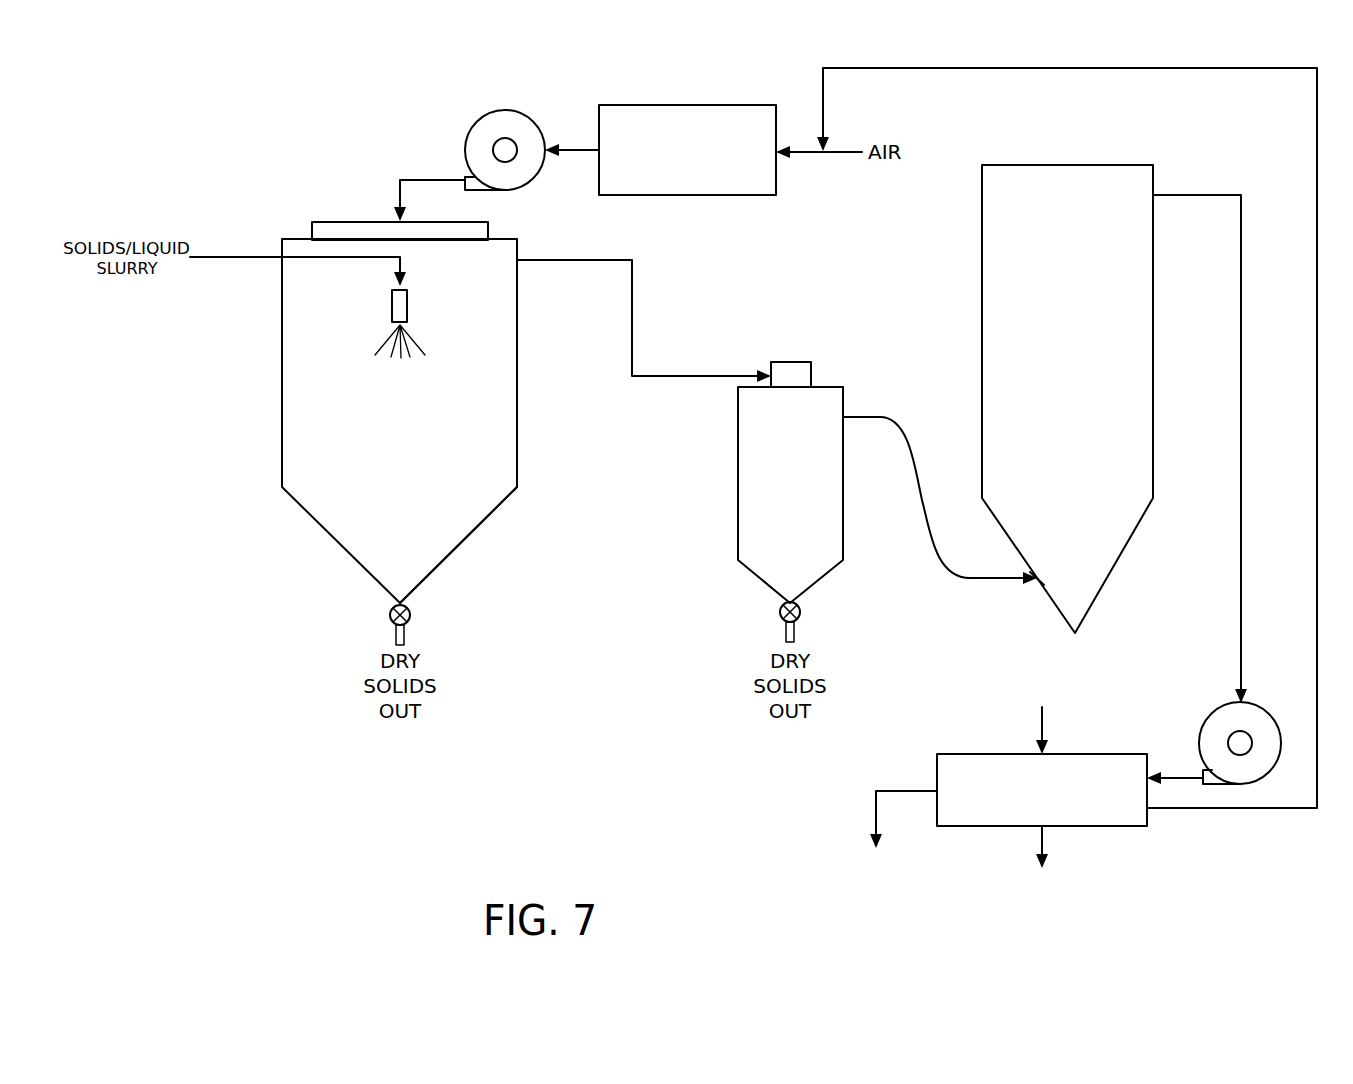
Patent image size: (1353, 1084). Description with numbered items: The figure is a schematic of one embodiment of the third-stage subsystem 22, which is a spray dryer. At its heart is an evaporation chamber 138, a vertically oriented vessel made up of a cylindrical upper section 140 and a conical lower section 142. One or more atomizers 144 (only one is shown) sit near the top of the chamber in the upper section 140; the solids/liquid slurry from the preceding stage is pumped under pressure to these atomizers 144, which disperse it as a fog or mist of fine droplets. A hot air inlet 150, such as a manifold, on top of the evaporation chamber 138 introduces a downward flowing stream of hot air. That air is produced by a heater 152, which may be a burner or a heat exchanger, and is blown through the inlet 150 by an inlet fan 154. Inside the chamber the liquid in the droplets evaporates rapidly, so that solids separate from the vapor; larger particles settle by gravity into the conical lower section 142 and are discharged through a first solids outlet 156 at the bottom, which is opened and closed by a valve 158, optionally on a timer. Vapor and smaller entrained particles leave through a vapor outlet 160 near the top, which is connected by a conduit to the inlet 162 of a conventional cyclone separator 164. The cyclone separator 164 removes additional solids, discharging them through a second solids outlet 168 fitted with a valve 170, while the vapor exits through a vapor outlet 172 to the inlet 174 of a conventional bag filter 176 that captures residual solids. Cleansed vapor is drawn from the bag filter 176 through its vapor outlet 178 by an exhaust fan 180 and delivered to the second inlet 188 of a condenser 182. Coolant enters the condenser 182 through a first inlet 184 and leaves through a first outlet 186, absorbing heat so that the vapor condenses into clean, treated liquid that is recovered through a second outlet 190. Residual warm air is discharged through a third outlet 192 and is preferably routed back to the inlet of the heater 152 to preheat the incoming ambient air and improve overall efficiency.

The third-stage subsystem 22 is at (232, 602).
The evaporation chamber 138 is at (285, 395).
The cylindrical upper section 140 is at (500, 356).
The conical lower section 142 is at (468, 515).
The atomizer 144 is at (407, 302).
The hot air inlet 150 is at (322, 230).
The heater 152 is at (727, 195).
The inlet fan 154 is at (476, 142).
The first solids outlet 156 is at (405, 638).
The valve 158 is at (390, 617).
The vapor outlet 160 is at (520, 262).
The inlet 162 is at (768, 375).
The cyclone separator 164 is at (828, 385).
The second solids outlet 168 is at (795, 640).
The valve 170 is at (780, 617).
The vapor outlet 172 is at (845, 417).
The inlet 174 is at (1037, 585).
The bag filter 176 is at (995, 257).
The vapor outlet 178 is at (1155, 193).
The exhaust fan 180 is at (1212, 728).
The condenser 182 is at (1100, 826).
The first inlet 184 is at (1037, 752).
The first outlet 186 is at (1040, 828).
The second inlet 188 is at (1150, 775).
The second outlet 190 is at (937, 785).
The third outlet 192 is at (1147, 808).